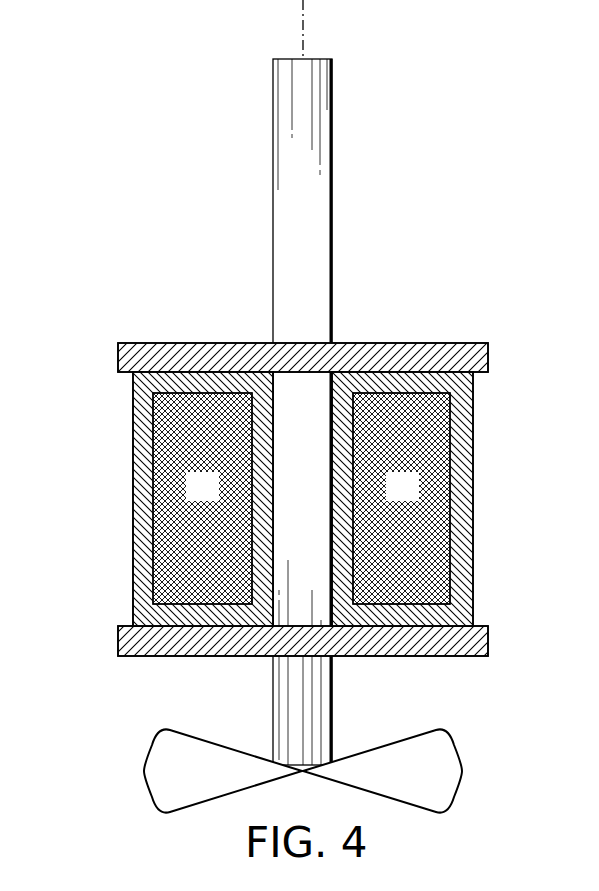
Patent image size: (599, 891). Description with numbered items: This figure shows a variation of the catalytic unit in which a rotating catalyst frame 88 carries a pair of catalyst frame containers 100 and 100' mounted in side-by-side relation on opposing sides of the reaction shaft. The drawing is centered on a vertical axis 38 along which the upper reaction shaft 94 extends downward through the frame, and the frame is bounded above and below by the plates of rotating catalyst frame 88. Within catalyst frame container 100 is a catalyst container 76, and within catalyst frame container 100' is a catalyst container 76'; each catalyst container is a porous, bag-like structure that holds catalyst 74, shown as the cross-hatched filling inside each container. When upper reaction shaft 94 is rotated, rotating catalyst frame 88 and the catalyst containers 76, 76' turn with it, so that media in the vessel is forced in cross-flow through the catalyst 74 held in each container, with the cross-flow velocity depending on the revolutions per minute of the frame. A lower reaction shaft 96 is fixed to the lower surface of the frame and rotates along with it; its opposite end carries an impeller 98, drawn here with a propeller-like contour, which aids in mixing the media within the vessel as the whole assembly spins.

The axis of rotation 38 is at (303, 14).
The upper reaction shaft 94 is at (332, 190).
The lower reaction shaft 96 is at (332, 690).
The rotating catalyst frame 88 is at (417, 343).
The catalyst frame container 100 is at (460, 499).
The catalyst frame container 100' is at (144, 499).
The catalyst container 76 is at (457, 498).
The catalyst container 76' is at (152, 498).
The catalyst 74 is at (217, 499).
The impeller 98 is at (457, 800).